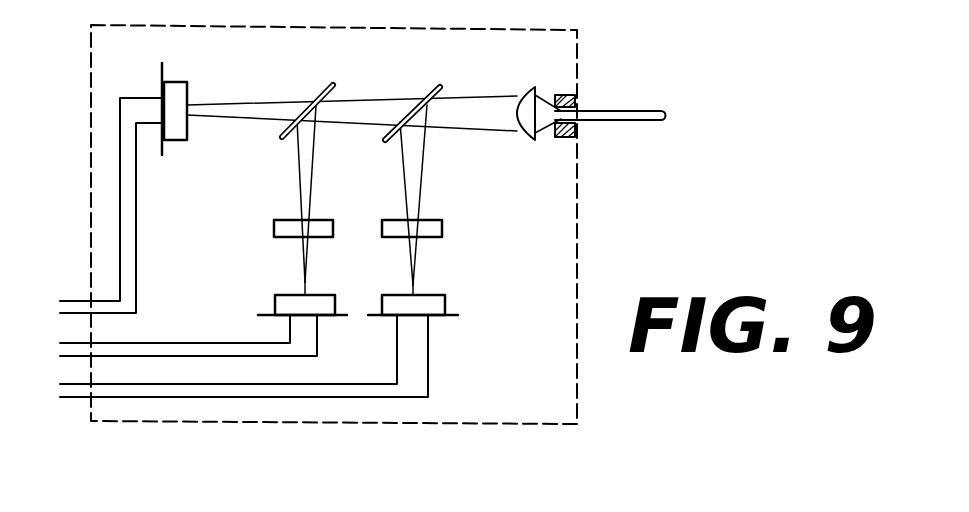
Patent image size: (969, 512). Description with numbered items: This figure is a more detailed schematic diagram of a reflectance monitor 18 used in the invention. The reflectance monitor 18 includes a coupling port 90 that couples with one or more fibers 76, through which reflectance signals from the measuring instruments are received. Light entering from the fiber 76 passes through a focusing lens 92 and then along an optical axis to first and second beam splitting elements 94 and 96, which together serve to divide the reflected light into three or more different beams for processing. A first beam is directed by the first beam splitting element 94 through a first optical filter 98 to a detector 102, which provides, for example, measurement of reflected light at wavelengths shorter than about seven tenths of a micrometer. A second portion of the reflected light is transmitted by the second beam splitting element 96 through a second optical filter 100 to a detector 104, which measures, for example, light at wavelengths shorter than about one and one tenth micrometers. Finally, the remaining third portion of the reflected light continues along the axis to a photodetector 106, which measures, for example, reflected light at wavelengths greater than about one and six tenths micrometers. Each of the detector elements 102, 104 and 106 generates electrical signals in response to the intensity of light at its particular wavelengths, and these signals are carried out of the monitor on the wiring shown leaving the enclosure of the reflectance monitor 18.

The reflectance monitor 18 is at (628, 48).
The fiber 76 is at (622, 122).
The coupling port 90 is at (580, 100).
The focusing lens 92 is at (522, 88).
The first beam splitting element 94 is at (435, 90).
The second beam splitting element 96 is at (325, 88).
The first optical filter 98 is at (430, 222).
The second optical filter 100 is at (322, 222).
The detector 102 is at (423, 305).
The detector 104 is at (317, 305).
The photodetector 106 is at (172, 95).